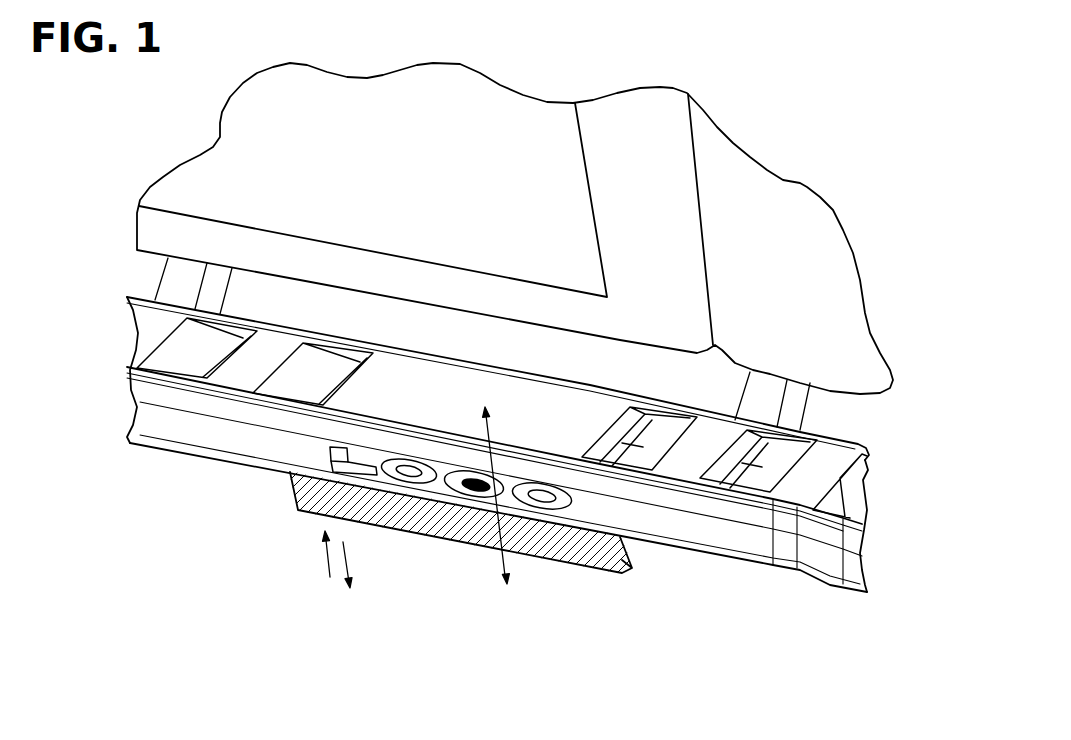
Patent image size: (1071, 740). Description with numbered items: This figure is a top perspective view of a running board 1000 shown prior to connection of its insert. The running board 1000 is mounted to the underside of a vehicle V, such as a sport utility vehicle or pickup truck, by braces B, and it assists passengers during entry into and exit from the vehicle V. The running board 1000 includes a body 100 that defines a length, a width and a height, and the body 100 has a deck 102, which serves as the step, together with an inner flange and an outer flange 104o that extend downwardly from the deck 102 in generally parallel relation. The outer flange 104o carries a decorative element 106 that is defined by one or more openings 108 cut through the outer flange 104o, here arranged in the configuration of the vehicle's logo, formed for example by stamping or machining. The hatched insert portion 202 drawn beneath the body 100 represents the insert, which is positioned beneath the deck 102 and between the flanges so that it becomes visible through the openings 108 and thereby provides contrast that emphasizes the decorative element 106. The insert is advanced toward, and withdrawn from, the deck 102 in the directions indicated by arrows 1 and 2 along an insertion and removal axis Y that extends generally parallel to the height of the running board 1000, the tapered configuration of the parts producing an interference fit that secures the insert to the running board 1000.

The running board 1000 is at (875, 425).
The vehicle V is at (640, 126).
The braces B is at (180, 280).
The body 100 is at (830, 425).
The deck 102 is at (498, 392).
The outer flange 104o is at (714, 530).
The decorative element 106 is at (313, 452).
The openings 108 is at (341, 448).
The absorber block 202 is at (573, 545).
The insertion axis Y is at (483, 499).
The arrow 1 is at (314, 554).
The arrow 2 is at (355, 565).